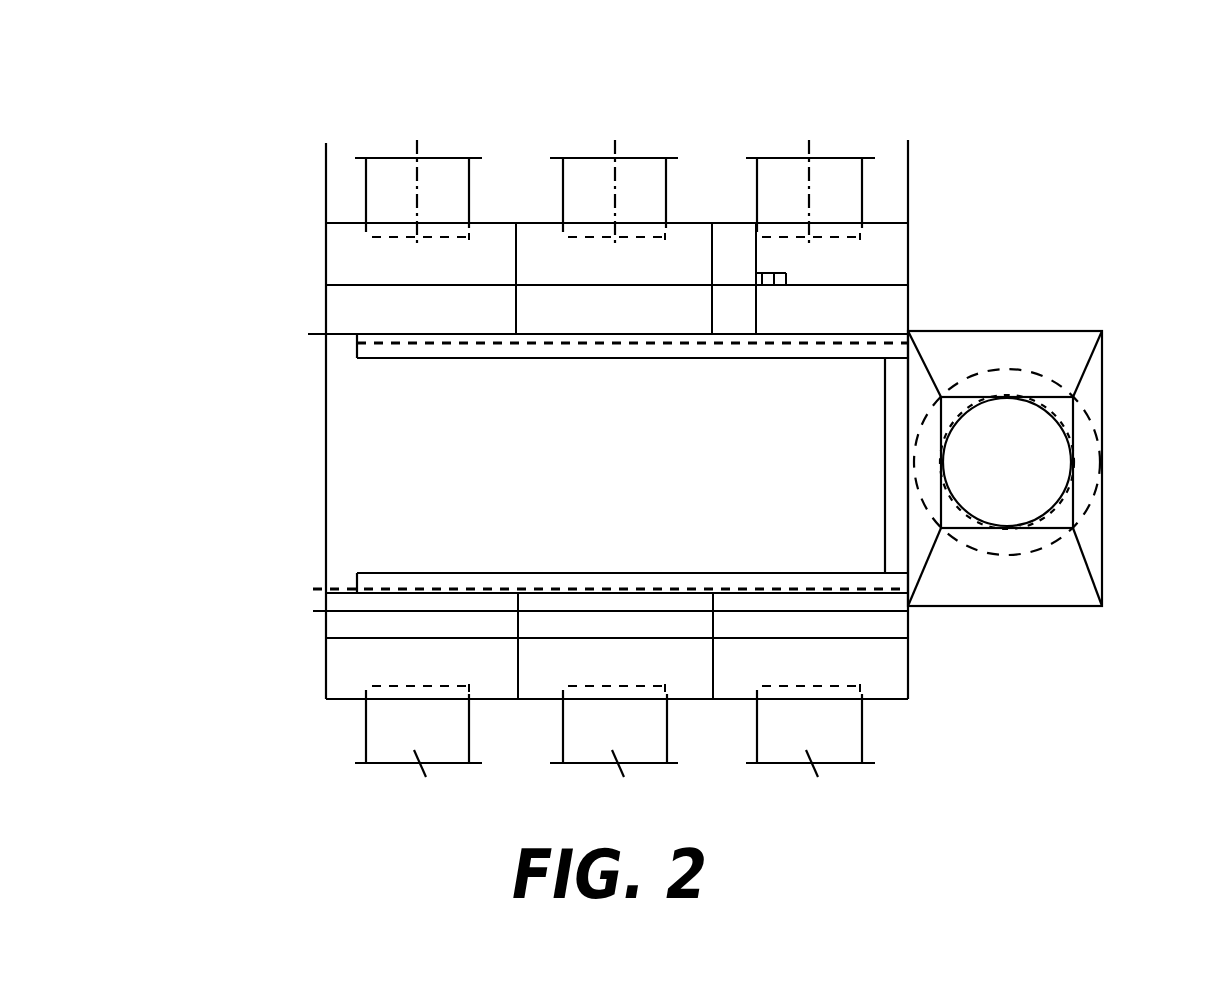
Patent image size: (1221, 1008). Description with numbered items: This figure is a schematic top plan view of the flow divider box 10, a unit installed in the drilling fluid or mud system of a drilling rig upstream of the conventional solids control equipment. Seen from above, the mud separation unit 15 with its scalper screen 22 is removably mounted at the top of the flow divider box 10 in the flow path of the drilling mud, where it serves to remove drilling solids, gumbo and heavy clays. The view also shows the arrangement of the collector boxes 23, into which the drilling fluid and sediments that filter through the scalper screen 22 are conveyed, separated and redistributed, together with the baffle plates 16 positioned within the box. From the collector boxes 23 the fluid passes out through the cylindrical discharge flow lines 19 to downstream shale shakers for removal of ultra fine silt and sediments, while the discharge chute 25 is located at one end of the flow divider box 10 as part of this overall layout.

The flow divider box 10 is at (326, 570).
The mud separation unit 15 is at (490, 458).
The baffle plates 16 is at (879, 284).
The cylindrical discharge flow lines 19 is at (838, 158).
The scalper screen 22 is at (558, 463).
The collector boxes 23 is at (345, 243).
The discharge chute 25 is at (1103, 350).